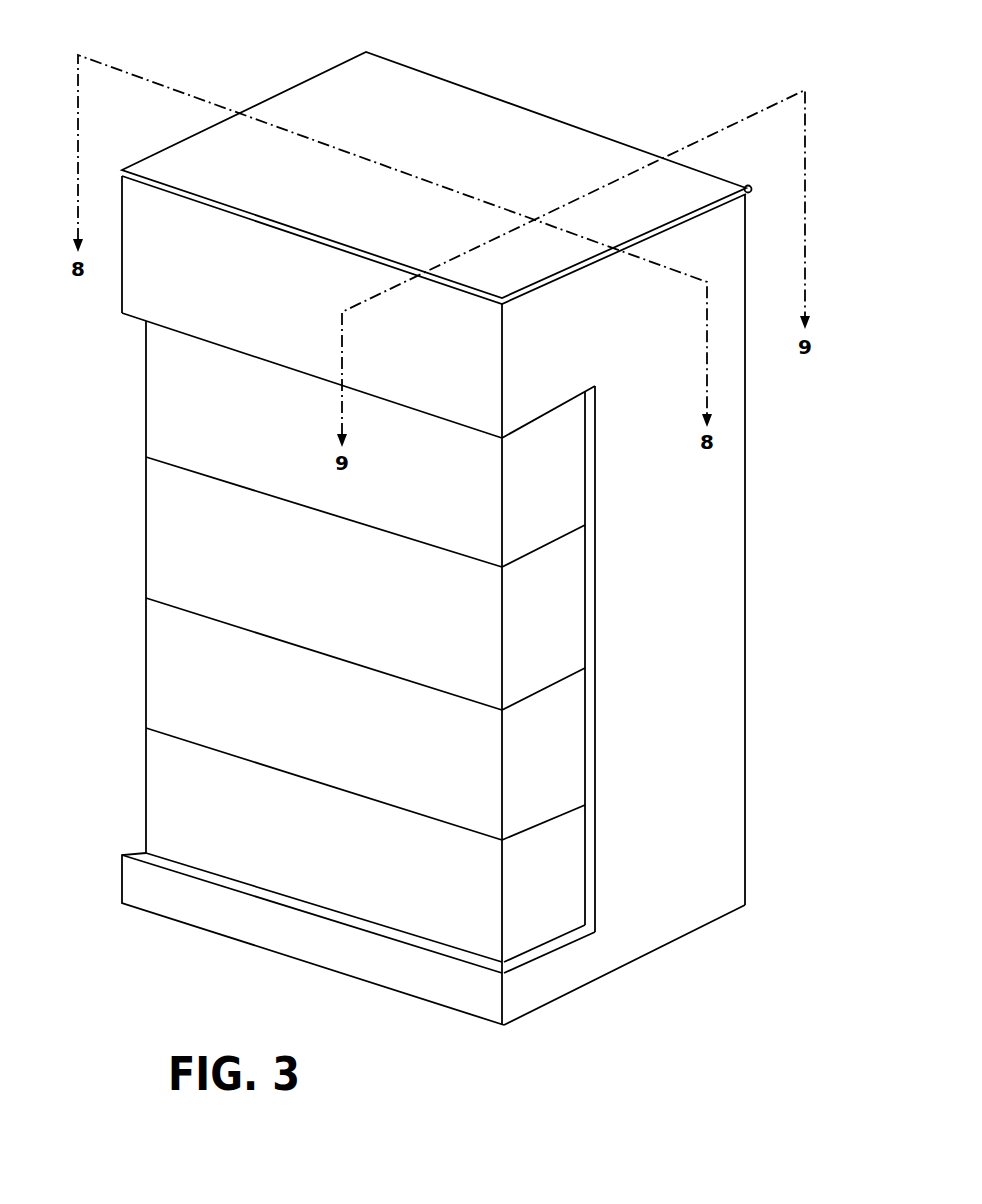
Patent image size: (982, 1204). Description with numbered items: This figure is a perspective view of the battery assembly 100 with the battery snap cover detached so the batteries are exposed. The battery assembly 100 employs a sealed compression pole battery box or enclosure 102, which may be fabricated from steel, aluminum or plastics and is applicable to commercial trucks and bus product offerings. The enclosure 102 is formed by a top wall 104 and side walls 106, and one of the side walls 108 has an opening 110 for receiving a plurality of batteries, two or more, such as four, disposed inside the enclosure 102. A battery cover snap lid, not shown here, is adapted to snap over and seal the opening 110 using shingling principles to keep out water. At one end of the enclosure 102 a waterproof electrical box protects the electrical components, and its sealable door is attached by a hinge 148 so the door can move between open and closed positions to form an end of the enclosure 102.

The battery assembly 100 is at (440, 517).
The enclosure 102 is at (722, 612).
The top wall 104 is at (388, 93).
The side walls 106 is at (722, 510).
The side wall 108 is at (138, 298).
The opening 110 is at (272, 641).
The hinge 148 is at (751, 189).